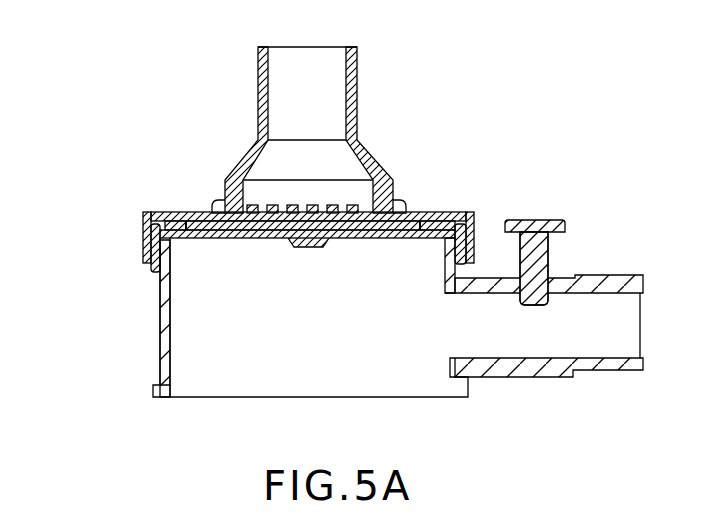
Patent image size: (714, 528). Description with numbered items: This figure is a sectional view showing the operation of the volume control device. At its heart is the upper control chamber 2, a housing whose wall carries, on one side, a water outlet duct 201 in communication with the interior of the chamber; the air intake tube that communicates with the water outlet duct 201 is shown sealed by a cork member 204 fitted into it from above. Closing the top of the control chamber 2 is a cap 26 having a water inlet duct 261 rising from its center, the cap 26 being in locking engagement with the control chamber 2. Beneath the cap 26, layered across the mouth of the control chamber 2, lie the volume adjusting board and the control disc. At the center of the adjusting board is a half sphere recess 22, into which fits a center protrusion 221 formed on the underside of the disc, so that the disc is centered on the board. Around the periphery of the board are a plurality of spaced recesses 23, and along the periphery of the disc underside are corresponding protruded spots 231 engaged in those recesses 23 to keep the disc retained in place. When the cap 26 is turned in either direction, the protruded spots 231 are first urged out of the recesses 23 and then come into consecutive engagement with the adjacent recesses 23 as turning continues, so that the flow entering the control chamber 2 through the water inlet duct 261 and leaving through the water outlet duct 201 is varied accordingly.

The control chamber 2 is at (160, 323).
The half sphere recess 22 is at (330, 250).
The center protrusion 221 is at (305, 248).
The spaced recesses 23 is at (200, 238).
The protruded spots 231 is at (192, 238).
The cap 26 is at (165, 212).
The water inlet duct 261 is at (258, 75).
The water outlet duct 201 is at (618, 280).
The cork member 204 is at (540, 221).